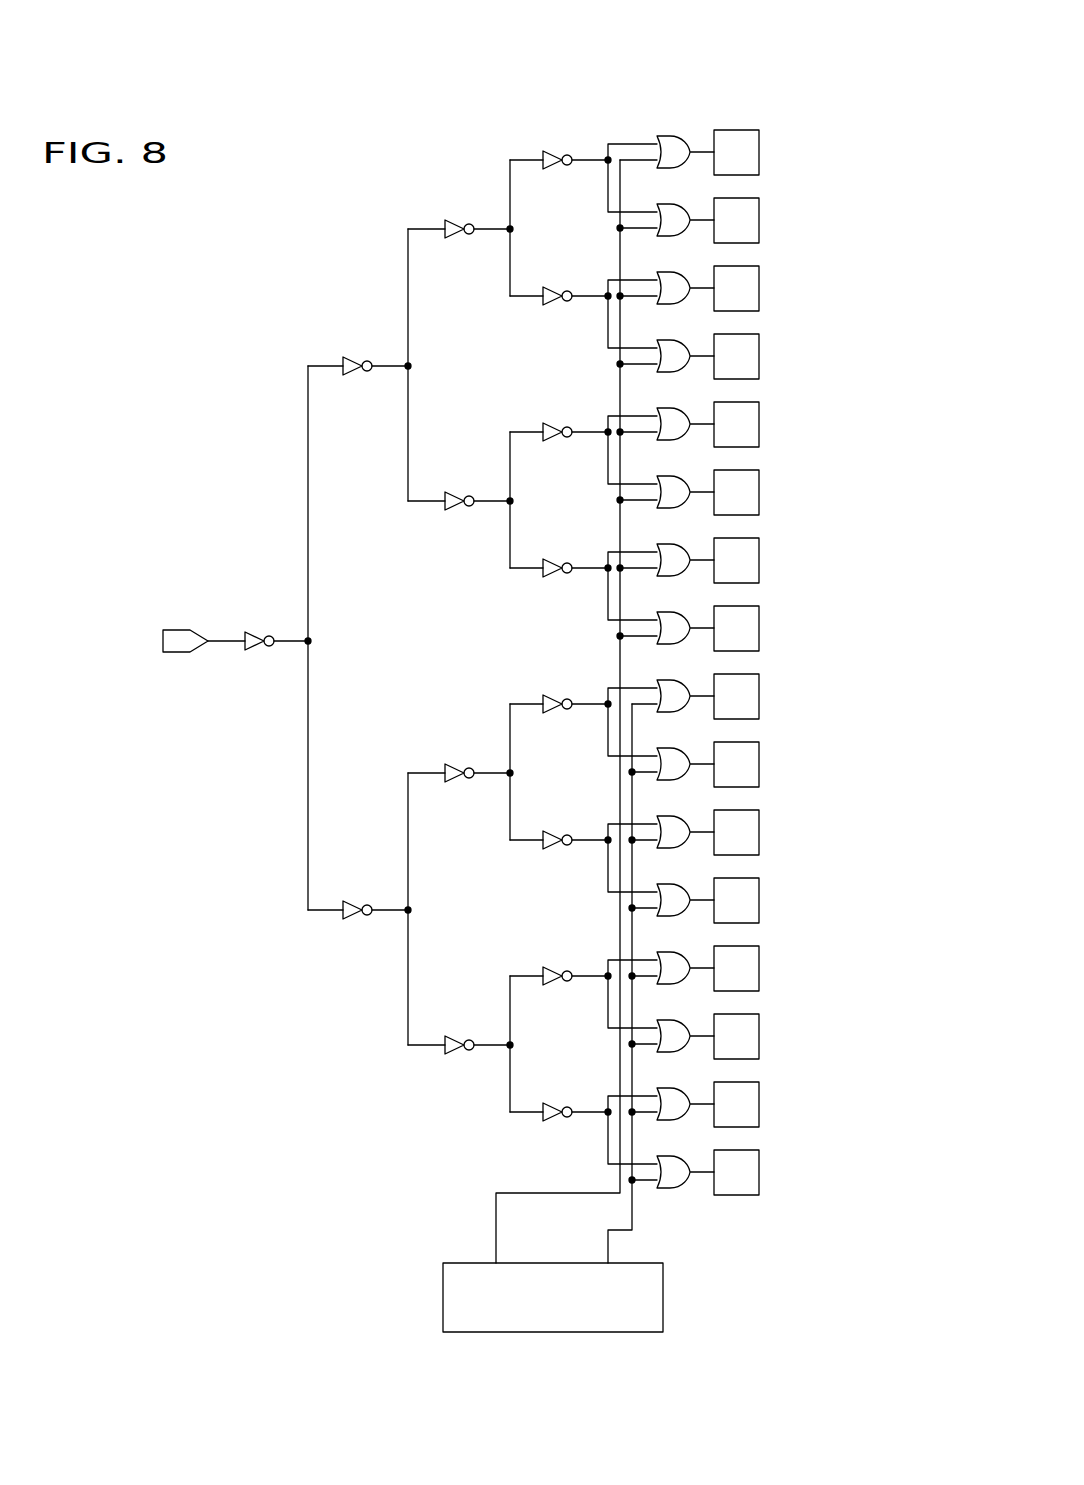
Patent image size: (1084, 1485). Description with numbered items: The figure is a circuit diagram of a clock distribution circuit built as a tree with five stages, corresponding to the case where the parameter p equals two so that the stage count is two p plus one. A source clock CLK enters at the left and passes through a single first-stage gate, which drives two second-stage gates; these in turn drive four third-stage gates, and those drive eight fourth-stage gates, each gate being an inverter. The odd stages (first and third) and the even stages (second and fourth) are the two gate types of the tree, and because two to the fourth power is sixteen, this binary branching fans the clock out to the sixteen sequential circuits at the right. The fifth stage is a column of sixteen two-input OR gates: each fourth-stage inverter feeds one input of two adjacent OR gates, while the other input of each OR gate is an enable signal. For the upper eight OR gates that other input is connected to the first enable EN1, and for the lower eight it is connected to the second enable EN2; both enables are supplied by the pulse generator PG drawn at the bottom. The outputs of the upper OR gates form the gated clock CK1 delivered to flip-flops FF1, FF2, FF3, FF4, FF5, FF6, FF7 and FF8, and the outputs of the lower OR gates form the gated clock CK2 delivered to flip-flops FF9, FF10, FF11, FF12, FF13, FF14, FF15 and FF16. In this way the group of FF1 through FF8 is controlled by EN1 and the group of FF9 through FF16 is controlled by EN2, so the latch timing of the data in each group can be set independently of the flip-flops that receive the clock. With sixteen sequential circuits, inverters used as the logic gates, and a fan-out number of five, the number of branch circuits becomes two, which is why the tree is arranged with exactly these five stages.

The clock input CLK is at (166, 642).
The first enable signal EN1 is at (492, 1206).
The second enable signal EN2 is at (628, 1206).
The pulse generator PG is at (553, 1297).
The first clock signal CK1 is at (699, 642).
The second clock signal CK2 is at (699, 1183).
The flip-flop FF1 is at (760, 152).
The flip-flop FF2 is at (760, 220).
The flip-flop FF3 is at (760, 288).
The flip-flop FF4 is at (760, 356).
The flip-flop FF5 is at (760, 424).
The flip-flop FF6 is at (760, 492).
The flip-flop FF7 is at (760, 560).
The flip-flop FF8 is at (760, 628).
The flip-flop FF9 is at (760, 696).
The flip-flop FF10 is at (760, 764).
The flip-flop FF11 is at (760, 832).
The flip-flop FF12 is at (760, 900).
The flip-flop FF13 is at (760, 968).
The flip-flop FF14 is at (760, 1036).
The flip-flop FF15 is at (760, 1104).
The flip-flop FF16 is at (760, 1172).